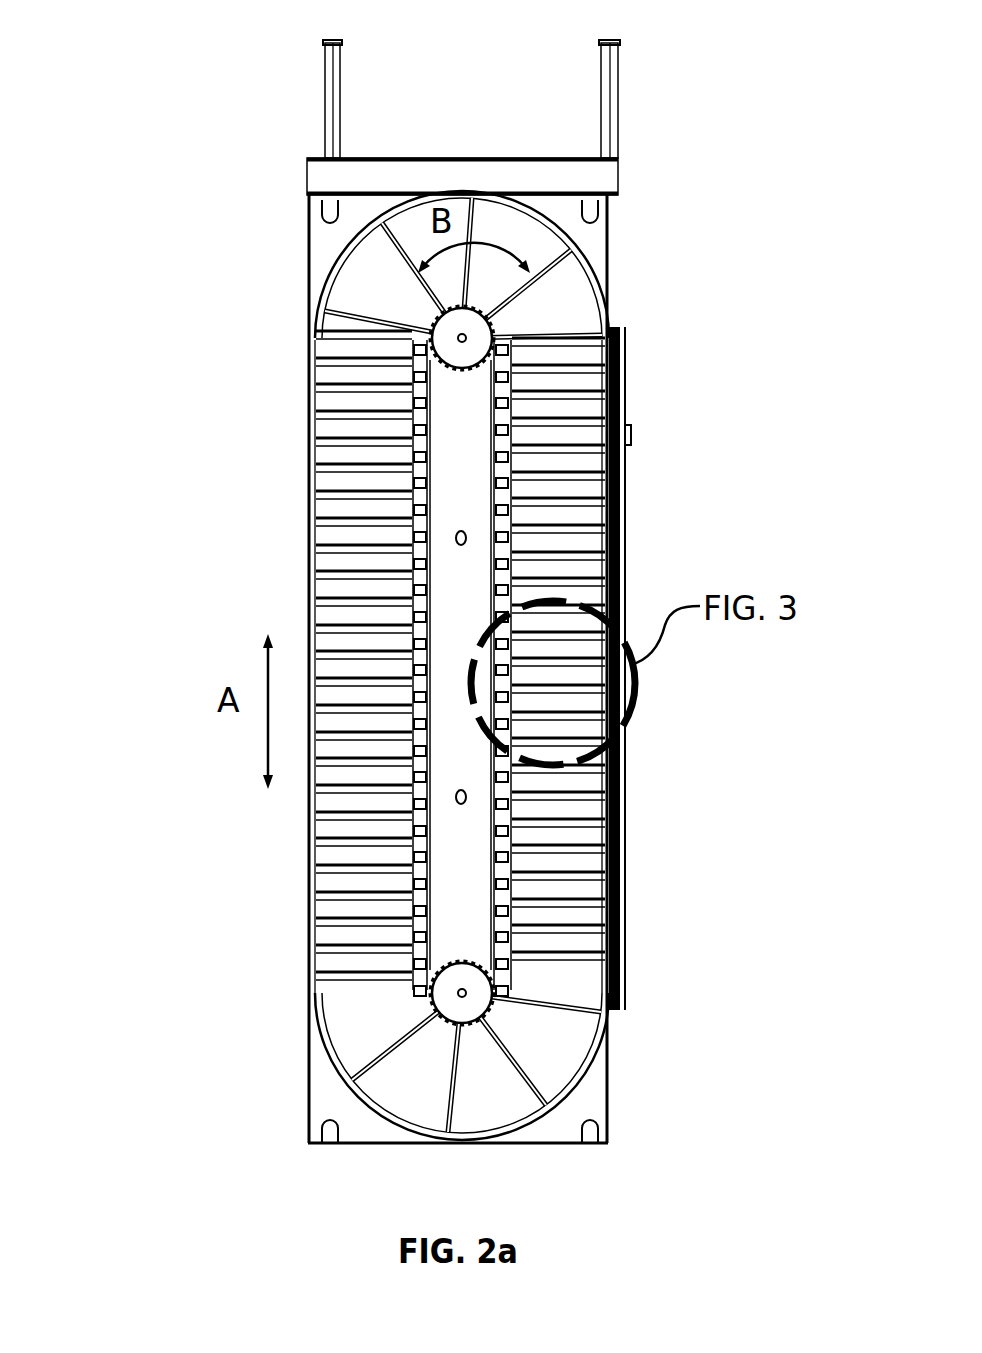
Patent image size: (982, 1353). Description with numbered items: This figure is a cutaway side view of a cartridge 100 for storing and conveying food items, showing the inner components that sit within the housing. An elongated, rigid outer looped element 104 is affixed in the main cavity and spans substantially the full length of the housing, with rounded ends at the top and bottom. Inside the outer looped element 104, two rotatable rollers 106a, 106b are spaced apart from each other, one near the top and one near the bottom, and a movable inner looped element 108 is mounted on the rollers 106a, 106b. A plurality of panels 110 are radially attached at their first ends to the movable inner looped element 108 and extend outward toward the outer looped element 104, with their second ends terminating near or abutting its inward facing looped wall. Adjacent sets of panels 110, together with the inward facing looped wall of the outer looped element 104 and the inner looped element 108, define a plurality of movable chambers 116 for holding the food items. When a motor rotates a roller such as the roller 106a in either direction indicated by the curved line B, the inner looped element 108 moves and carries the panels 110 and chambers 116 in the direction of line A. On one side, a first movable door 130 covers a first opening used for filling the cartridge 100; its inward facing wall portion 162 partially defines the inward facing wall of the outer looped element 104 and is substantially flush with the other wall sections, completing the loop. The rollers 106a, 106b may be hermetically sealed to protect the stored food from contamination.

The cartridge 100 is at (237, 127).
The outer looped element 104 is at (597, 270).
The rotatable roller 106a is at (490, 330).
The rotatable roller 106b is at (490, 988).
The movable inner looped element 108 is at (495, 523).
The panels 110 is at (316, 437).
The movable chambers 116 is at (335, 557).
The first movable door 130 is at (630, 393).
The inward facing wall portion 162 is at (607, 410).